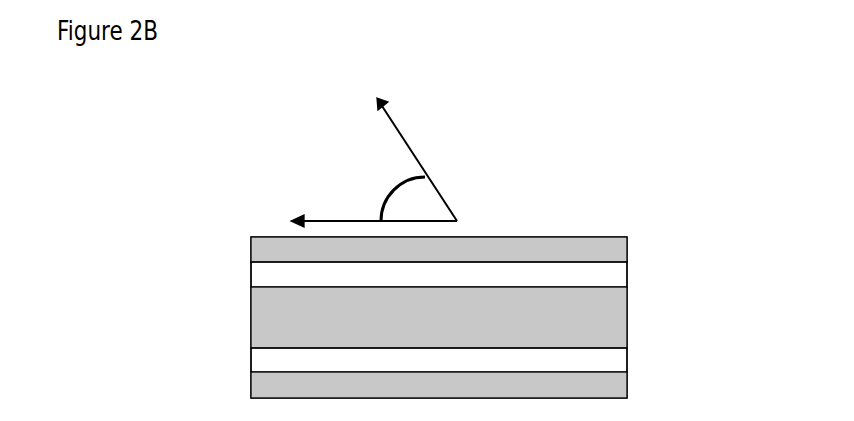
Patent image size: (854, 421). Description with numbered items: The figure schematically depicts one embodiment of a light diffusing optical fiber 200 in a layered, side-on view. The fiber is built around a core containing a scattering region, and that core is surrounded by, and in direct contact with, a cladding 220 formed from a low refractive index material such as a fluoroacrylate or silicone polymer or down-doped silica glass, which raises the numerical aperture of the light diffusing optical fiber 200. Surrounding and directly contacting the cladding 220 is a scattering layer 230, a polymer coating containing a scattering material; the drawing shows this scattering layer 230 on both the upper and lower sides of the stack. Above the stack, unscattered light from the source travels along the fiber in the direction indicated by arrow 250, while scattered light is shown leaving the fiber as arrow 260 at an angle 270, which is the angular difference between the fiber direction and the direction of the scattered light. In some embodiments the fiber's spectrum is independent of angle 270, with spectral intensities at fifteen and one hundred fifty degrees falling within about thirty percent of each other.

The light diffusing optical fiber 200 is at (541, 201).
The cladding 220 is at (615, 318).
The scattering layer 230 is at (625, 247).
The arrow (direction of unscattered light propagation) 250 is at (362, 211).
The arrow (scattered light) 260 is at (417, 156).
The angle 270 is at (391, 198).